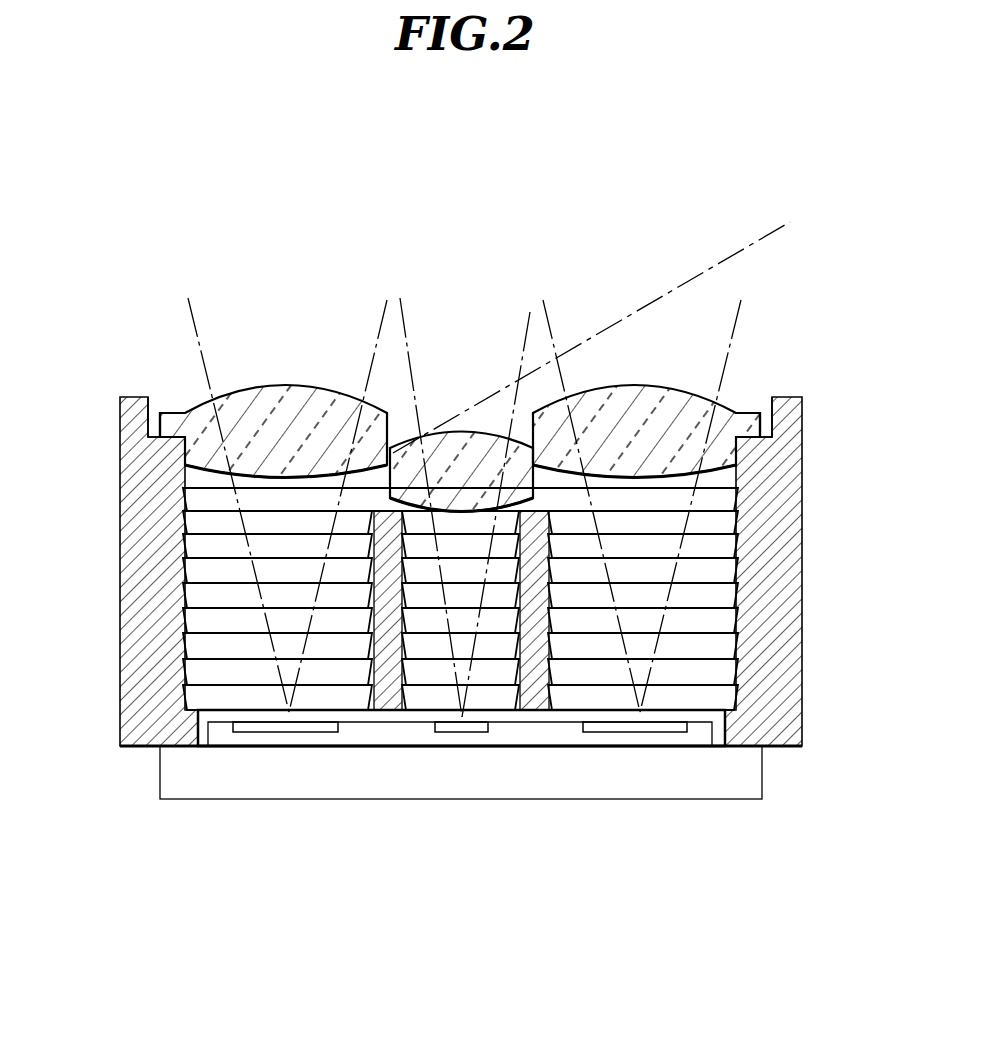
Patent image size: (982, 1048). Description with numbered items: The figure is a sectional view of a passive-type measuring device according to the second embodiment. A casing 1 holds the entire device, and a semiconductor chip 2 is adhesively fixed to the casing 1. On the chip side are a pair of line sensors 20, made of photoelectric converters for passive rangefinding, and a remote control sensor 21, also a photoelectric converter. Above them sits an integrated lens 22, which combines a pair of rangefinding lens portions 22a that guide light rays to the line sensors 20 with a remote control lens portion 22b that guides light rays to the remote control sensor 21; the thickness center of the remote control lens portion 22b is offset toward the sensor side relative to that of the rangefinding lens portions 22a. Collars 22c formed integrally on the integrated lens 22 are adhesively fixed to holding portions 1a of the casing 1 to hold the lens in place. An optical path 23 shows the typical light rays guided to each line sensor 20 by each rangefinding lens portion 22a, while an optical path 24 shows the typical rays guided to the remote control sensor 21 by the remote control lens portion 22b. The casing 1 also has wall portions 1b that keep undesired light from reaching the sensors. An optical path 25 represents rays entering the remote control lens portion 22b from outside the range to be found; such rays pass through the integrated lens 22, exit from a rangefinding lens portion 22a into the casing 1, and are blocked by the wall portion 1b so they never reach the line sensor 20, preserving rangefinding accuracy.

The casing 1 is at (782, 745).
The holding portion 1a is at (160, 418).
The wall portion 1b is at (380, 712).
The semiconductor chip 2 is at (677, 782).
The line sensor 20 is at (305, 731).
The remote control sensor 21 is at (465, 732).
The integrated lens 22 is at (477, 359).
The rangefinding lens portion 22a is at (277, 385).
The remote control lens portion 22b is at (460, 432).
The collar 22c is at (178, 412).
The optical path of rangefinding light rays 23 is at (318, 595).
The optical path of remote control light rays 24 is at (518, 378).
The optical path of undesired light rays 25 is at (690, 277).